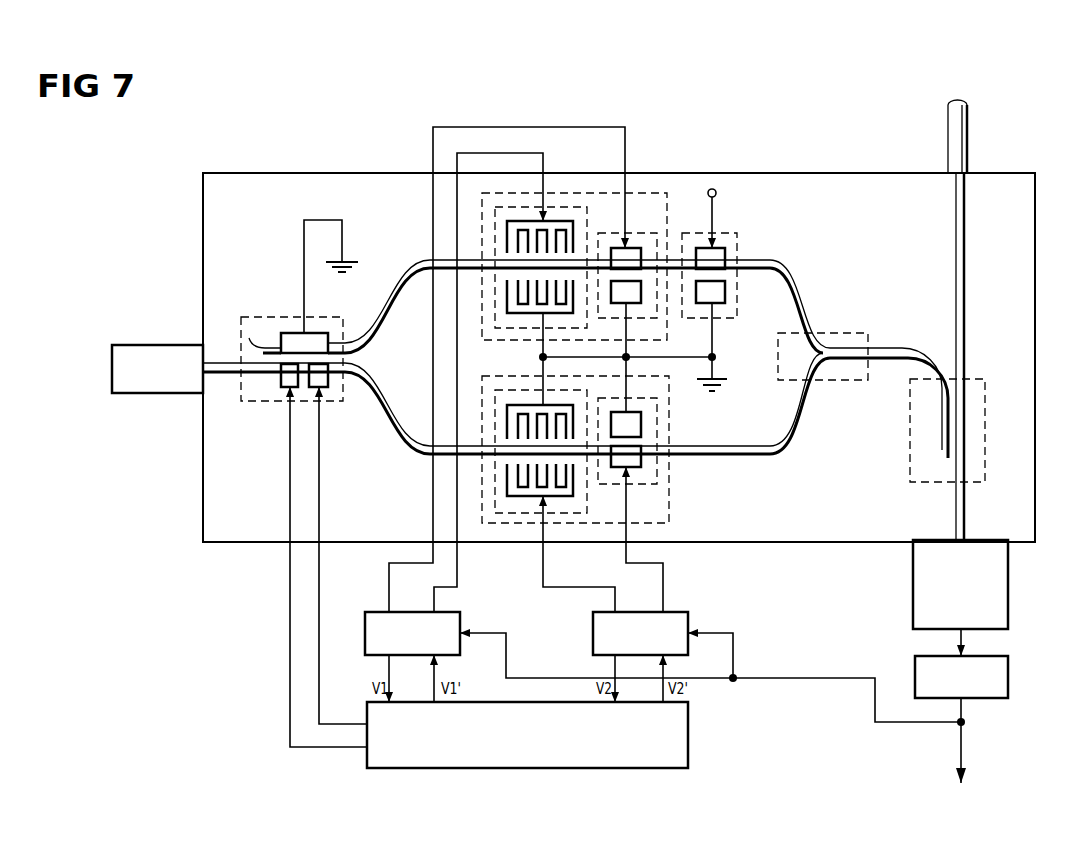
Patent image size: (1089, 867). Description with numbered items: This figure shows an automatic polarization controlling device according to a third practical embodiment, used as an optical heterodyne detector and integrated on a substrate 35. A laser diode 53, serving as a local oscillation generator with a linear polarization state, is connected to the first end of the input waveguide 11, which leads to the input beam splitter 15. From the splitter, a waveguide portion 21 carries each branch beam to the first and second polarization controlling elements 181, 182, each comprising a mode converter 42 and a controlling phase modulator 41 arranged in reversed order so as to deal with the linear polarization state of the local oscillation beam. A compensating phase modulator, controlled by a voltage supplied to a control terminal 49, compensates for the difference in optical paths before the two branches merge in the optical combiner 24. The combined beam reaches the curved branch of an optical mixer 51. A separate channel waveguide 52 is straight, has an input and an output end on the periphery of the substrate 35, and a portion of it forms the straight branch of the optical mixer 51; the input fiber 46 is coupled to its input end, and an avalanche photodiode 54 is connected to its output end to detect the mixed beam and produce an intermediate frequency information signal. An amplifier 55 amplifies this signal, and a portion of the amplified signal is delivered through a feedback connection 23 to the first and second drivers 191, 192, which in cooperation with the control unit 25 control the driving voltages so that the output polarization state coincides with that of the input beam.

The input waveguide 11 is at (206, 363).
The input beam splitter 15 is at (258, 300).
The waveguide portion 21 is at (395, 305).
The feedback connection 23 is at (800, 678).
The optical combiner 24 is at (837, 333).
The control unit 25 is at (689, 745).
The substrate 35 is at (1035, 490).
The controlling phase modulator 41 is at (633, 233).
The mode converter 42 is at (585, 228).
The input fiber 46 is at (969, 127).
The control terminal 49 is at (716, 195).
The optical mixer 51 is at (970, 380).
The separate channel waveguide 52 is at (966, 292).
The laser diode 53 is at (127, 345).
The avalanche photodiode 54 is at (1009, 612).
The amplifier 55 is at (1009, 683).
The first polarization controlling element 181 is at (593, 270).
The second polarization controlling element 182 is at (669, 488).
The first driver 191 is at (461, 618).
The second driver 192 is at (689, 618).